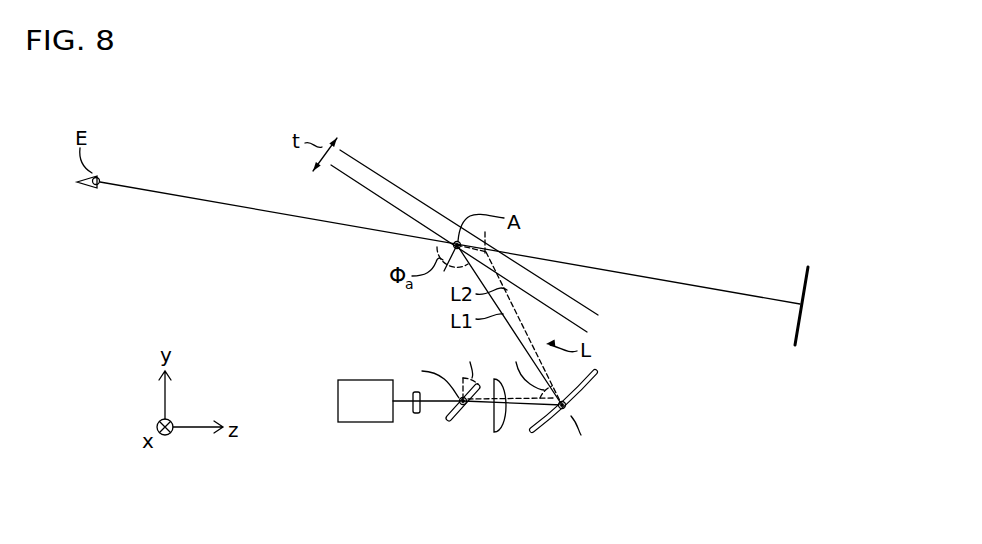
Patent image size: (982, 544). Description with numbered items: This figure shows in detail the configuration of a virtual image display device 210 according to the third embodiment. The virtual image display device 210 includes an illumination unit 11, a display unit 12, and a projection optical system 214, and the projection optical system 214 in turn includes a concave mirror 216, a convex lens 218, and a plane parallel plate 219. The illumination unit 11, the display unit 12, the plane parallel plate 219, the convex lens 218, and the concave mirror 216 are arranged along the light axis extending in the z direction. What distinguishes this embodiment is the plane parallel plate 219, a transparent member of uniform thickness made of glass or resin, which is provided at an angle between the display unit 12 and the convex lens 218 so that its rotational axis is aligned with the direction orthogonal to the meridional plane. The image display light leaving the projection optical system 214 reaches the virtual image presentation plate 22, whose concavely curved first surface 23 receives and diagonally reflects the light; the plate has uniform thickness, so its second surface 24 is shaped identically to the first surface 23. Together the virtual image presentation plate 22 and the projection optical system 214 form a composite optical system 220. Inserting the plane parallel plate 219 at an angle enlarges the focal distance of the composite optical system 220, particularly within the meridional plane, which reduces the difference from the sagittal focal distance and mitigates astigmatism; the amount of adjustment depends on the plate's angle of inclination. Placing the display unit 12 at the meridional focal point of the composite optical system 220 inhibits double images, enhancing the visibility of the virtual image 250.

The virtual image presentation plate 22 is at (450, 205).
The first surface 23 is at (368, 195).
The second surface 24 is at (383, 165).
The virtual image 250 is at (811, 241).
The virtual image display device 210 is at (462, 384).
The composite optical system 220 is at (507, 384).
The projection optical system 214 is at (411, 396).
The illumination unit 11 is at (365, 422).
The display unit 12 is at (416, 413).
The plane parallel plate 219 is at (455, 418).
The convex lens 218 is at (498, 433).
The concave mirror 216 is at (556, 420).